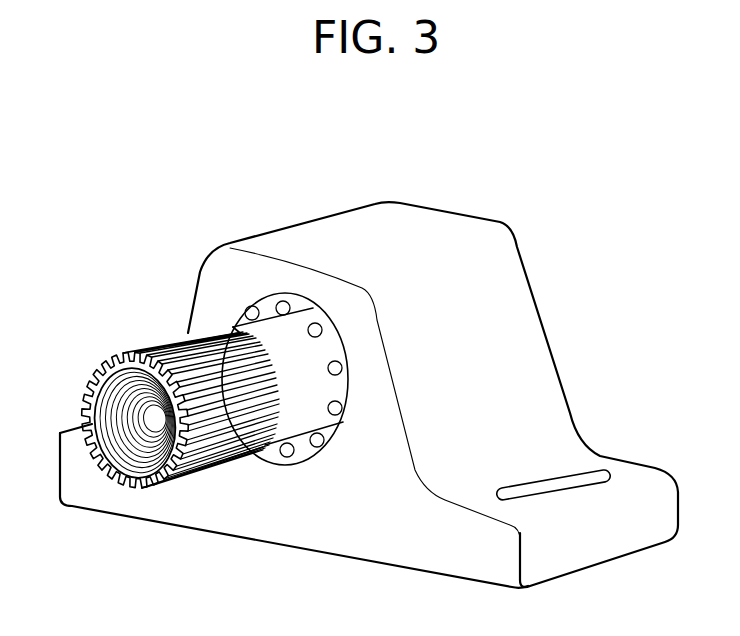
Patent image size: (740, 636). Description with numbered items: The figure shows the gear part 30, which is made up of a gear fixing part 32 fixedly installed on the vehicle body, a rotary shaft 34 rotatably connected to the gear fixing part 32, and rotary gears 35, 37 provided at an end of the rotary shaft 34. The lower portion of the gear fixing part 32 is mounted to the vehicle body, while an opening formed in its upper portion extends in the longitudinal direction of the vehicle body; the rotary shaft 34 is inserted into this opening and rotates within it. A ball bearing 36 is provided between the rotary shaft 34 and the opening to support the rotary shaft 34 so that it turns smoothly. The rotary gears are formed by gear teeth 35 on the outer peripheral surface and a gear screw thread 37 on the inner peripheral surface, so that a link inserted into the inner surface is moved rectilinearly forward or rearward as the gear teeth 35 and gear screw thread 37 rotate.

The gear part 30 is at (385, 115).
The gear fixing part 32 is at (540, 347).
The rotary shaft 34 is at (297, 405).
The gear teeth 35 is at (167, 347).
The ball bearing 36 is at (282, 305).
The gear screw thread 37 is at (92, 380).